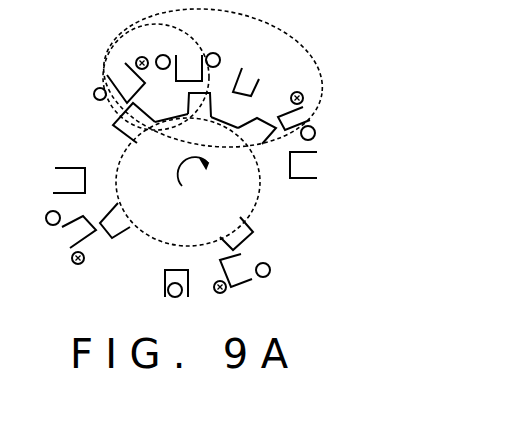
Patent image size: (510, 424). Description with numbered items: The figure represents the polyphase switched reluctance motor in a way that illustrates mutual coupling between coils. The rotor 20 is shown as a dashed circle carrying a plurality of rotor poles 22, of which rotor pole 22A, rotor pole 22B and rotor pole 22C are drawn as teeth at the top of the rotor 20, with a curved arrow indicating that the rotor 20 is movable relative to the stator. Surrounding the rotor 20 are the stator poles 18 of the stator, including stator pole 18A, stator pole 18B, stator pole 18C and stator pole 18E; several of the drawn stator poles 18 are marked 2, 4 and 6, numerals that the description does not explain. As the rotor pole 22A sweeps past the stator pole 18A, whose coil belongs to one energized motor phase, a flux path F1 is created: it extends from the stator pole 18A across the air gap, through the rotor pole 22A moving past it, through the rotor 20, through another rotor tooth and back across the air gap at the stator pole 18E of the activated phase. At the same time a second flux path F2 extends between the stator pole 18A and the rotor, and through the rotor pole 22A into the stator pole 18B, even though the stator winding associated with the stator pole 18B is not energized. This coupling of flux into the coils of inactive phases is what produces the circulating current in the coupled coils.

The finger position 2 is at (303, 165).
The finger position 4 is at (153, 50).
The finger position 6 is at (69, 180).
The stator poles 18 is at (183, 220).
The stator pole 18A is at (132, 68).
The stator pole 18B is at (204, 78).
The stator pole 18C is at (266, 80).
The stator pole 18E is at (296, 128).
The rotor 20 is at (249, 206).
The rotor poles 22 is at (130, 236).
The rotor pole 22A is at (118, 126).
The rotor pole 22B is at (189, 101).
The rotor pole 22C is at (255, 116).
The flux path F1 is at (312, 78).
The second flux path F2 is at (210, 45).